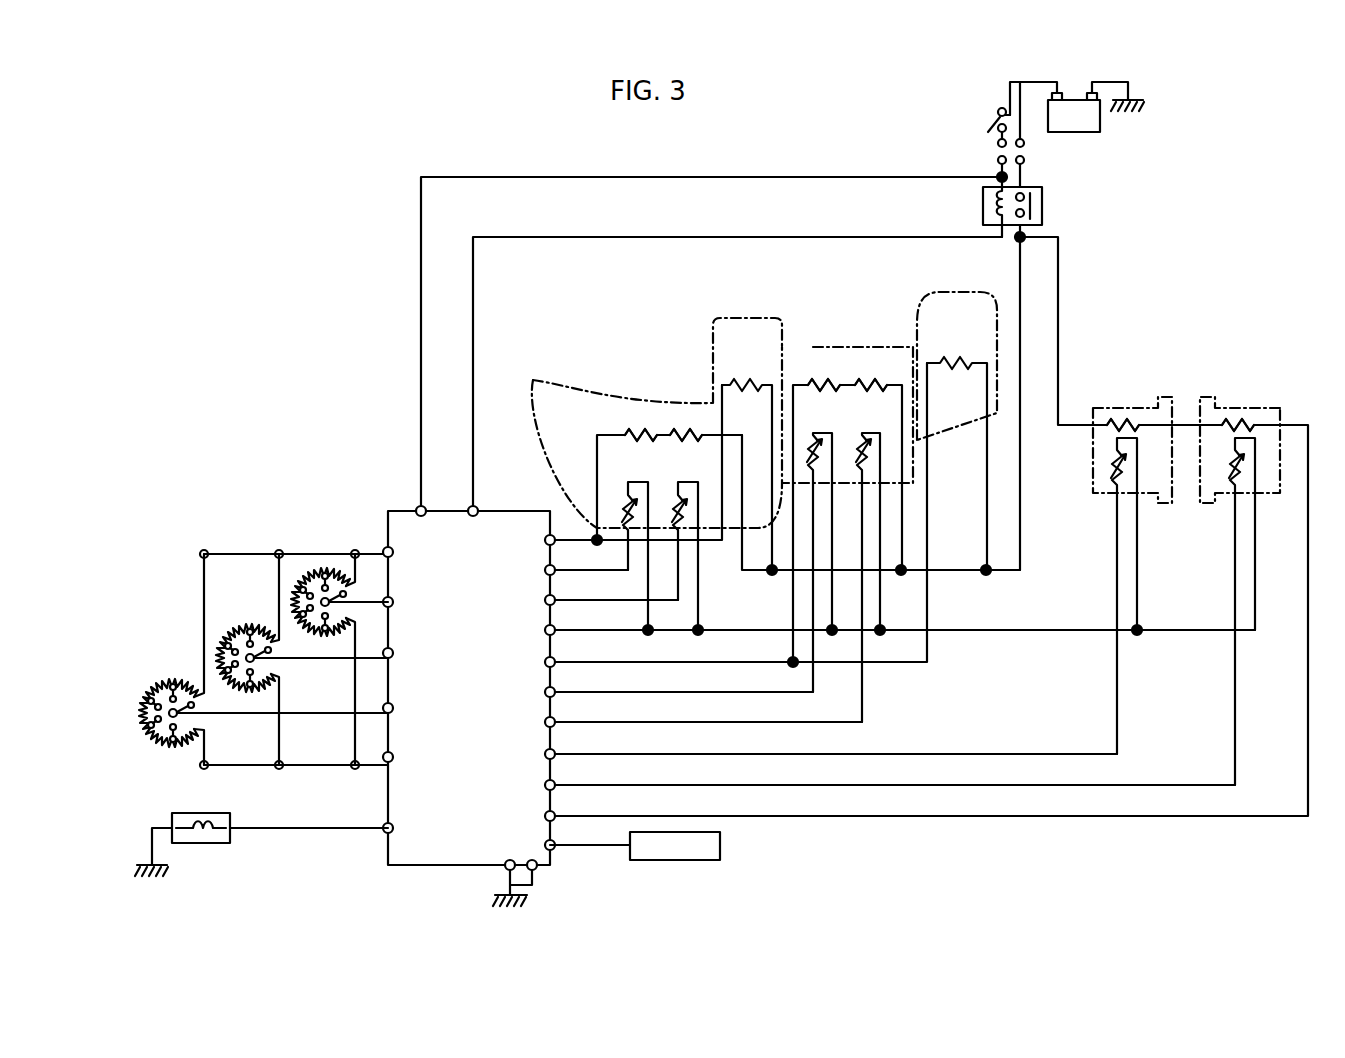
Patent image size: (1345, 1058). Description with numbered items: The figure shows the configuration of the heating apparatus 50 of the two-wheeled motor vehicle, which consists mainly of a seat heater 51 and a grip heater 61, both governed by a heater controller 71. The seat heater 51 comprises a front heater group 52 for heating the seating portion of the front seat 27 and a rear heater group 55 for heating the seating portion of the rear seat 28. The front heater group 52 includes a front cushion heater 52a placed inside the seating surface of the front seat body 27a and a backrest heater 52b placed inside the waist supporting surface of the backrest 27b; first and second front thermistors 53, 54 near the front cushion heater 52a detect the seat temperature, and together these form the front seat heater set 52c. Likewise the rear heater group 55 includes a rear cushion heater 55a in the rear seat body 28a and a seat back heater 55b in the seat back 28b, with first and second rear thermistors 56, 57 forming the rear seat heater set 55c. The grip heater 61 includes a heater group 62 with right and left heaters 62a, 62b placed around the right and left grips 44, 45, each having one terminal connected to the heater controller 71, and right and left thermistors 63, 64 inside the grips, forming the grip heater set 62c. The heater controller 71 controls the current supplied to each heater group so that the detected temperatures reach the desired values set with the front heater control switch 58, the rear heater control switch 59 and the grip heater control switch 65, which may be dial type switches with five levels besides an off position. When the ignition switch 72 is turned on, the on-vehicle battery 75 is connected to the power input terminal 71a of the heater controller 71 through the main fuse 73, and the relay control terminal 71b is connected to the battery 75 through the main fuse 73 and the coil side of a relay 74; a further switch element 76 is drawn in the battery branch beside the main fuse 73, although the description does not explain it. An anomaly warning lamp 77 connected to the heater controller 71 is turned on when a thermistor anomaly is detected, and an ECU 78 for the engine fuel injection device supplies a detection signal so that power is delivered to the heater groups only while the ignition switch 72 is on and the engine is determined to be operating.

The heating apparatus 50 is at (380, 195).
The front seat 27 is at (532, 378).
The front seat body 27a is at (595, 402).
The backrest 27b is at (725, 345).
The rear seat 28 is at (805, 335).
The rear seat body 28a is at (795, 355).
The seat back 28b is at (960, 300).
The right grip 44 is at (1108, 400).
The left grip 45 is at (1248, 400).
The seat heater 51 is at (595, 322).
The front heater group 52 is at (671, 442).
The front cushion heater 52a is at (641, 432).
The backrest heater 52b is at (677, 432).
The front seat heater set 52c is at (700, 340).
The first front thermistor 53 is at (624, 498).
The second front thermistor 54 is at (674, 498).
The rear heater group 55 is at (862, 486).
The rear cushion heater 55a is at (823, 382).
The seat back heater 55b is at (867, 382).
The rear seat heater set 55c is at (910, 308).
The first rear thermistor 56 is at (816, 448).
The second rear thermistor 57 is at (864, 448).
The front heater control switch 58 is at (314, 572).
The rear heater control switch 59 is at (238, 628).
The grip heater 61 is at (1249, 356).
The heater group 62 is at (1180, 388).
The right heater 62a is at (1124, 410).
The left heater 62b is at (1240, 412).
The grip heater set 62c is at (1215, 340).
The right thermistor 63 is at (1110, 466).
The left thermistor 64 is at (1227, 478).
The grip heater control switch 65 is at (156, 686).
The heater controller 71 is at (384, 507).
The power input terminal 71a is at (418, 504).
The relay control terminal 71b is at (476, 504).
The ignition switch 72 is at (990, 122).
The main fuse 73 is at (995, 153).
The relay 74 is at (1043, 206).
The on-vehicle battery 75 is at (1088, 133).
The switch 76 is at (1025, 150).
The anomaly warning lamp 77 is at (218, 843).
The ECU 78 is at (720, 847).